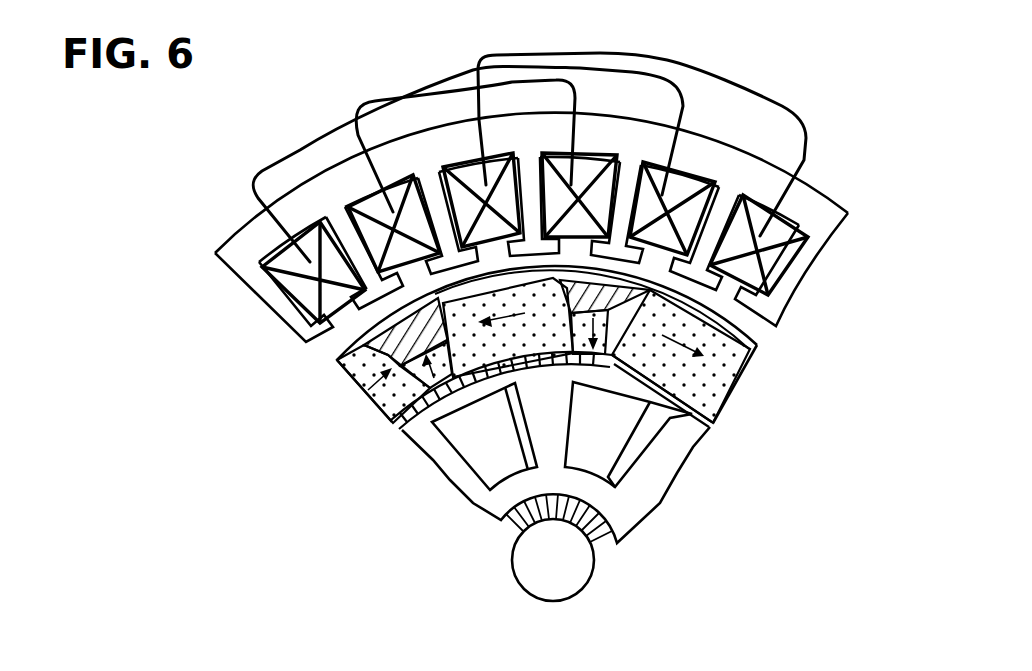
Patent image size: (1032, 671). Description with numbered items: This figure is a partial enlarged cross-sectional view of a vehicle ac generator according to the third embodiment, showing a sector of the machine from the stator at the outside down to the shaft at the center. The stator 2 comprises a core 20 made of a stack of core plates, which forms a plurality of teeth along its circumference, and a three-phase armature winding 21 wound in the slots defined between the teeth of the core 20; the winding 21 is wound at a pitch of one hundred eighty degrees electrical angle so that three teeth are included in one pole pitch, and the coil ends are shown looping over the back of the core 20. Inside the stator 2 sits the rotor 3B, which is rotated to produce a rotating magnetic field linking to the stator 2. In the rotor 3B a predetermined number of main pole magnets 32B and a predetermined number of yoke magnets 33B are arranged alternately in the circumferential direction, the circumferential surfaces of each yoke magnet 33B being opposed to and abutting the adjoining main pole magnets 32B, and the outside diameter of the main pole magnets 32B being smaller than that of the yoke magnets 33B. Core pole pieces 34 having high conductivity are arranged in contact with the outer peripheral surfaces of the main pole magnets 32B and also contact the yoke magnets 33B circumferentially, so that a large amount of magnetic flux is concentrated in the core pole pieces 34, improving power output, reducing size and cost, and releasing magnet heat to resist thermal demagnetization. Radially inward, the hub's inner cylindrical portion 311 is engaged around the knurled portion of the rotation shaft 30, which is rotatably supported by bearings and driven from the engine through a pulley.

The stator 2 is at (497, 236).
The core 20 is at (240, 258).
The three-phase armature winding 21 is at (292, 292).
The rotor 3B is at (588, 460).
The core pole pieces 34 is at (760, 342).
The yoke magnets 33B is at (727, 363).
The main pole magnets 32B is at (710, 423).
The inner cylindrical portion 311 is at (713, 427).
The rotation shaft 30 is at (560, 570).